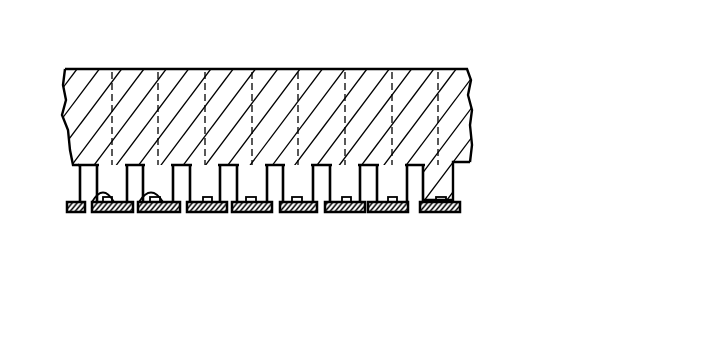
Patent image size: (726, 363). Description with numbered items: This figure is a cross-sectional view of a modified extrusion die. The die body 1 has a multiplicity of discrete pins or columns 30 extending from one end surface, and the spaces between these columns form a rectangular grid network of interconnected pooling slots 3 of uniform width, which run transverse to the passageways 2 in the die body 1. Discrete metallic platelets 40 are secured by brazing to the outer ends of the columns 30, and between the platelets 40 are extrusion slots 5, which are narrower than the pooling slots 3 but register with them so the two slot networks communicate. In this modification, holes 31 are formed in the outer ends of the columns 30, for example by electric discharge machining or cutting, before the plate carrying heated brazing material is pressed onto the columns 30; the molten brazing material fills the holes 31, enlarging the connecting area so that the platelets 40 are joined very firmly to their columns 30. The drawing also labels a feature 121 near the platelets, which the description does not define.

The die body 1 is at (496, 118).
The passageways 2 is at (436, 90).
The pooling slots 3 is at (273, 186).
The extrusion slots 5 is at (368, 212).
The columns 30 is at (453, 179).
The holes 31 is at (139, 204).
The metallic platelets 40 is at (457, 207).
The lead 121 is at (430, 206).